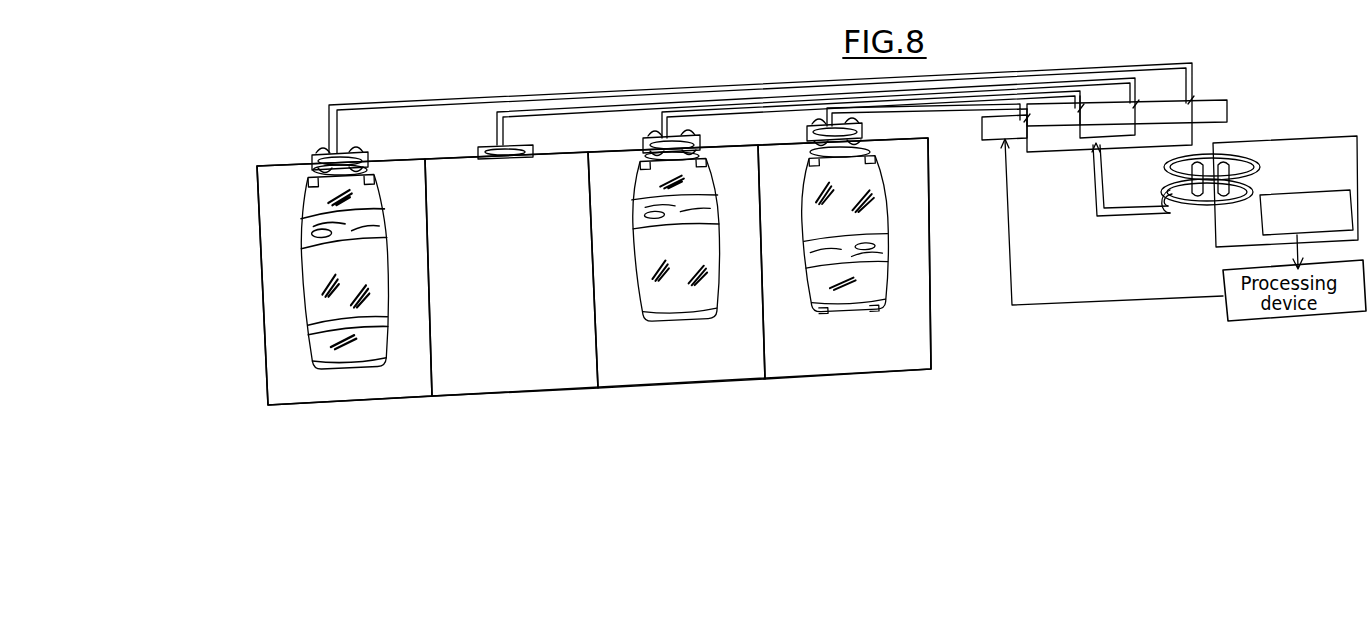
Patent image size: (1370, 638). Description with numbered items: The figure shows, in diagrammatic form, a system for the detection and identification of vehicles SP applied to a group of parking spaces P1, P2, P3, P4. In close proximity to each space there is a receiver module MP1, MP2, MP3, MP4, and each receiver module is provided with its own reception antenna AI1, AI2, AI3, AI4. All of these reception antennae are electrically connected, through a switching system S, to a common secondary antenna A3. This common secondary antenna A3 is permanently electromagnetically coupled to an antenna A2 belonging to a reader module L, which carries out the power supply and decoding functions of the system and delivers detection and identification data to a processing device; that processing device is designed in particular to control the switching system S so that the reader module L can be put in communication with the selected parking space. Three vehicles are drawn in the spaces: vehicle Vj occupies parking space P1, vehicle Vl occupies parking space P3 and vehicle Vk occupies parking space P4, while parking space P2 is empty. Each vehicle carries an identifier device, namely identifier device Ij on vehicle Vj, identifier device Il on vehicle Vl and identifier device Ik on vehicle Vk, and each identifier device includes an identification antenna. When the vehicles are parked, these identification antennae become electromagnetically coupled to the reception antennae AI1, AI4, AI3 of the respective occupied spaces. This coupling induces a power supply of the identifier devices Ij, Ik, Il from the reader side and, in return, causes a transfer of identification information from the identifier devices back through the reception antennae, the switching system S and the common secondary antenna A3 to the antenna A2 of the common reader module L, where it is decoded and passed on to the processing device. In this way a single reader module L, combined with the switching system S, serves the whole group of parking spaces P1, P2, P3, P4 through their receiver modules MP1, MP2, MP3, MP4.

The system for the detection and identification of vehicles SP is at (246, 240).
The parking space P1 is at (356, 404).
The parking space P2 is at (499, 396).
The parking space P3 is at (670, 387).
The parking space P4 is at (816, 377).
The vehicle Vj is at (315, 300).
The vehicle Vl is at (704, 296).
The vehicle Vk is at (874, 294).
The identifier device Ij is at (362, 170).
The identifier device Il is at (696, 156).
The identifier device Ik is at (868, 150).
The reception antenna AI1 is at (324, 150).
The reception antenna AI2 is at (487, 148).
The reception antenna AI3 is at (645, 138).
The reception antenna AI4 is at (812, 133).
The receiver module MP1 is at (352, 152).
The receiver module MP2 is at (512, 146).
The receiver module MP3 is at (688, 138).
The receiver module MP4 is at (870, 128).
The switching system S is at (1234, 103).
The reader module L is at (1310, 140).
The antenna of the reader module A2 is at (1243, 153).
The common secondary antenna A3 is at (1165, 211).